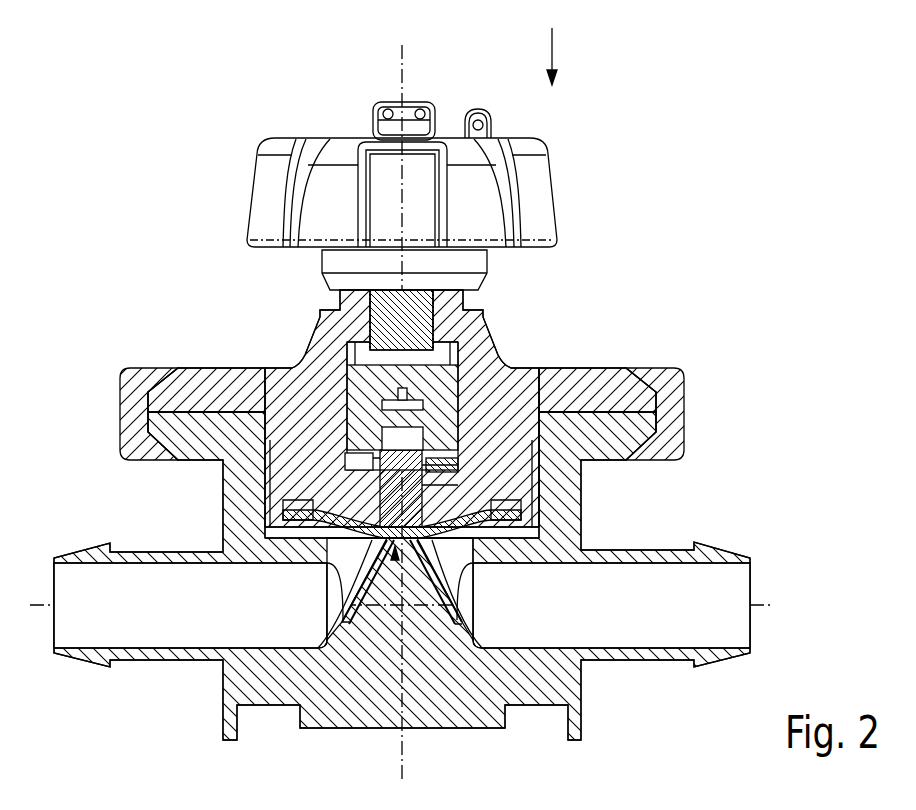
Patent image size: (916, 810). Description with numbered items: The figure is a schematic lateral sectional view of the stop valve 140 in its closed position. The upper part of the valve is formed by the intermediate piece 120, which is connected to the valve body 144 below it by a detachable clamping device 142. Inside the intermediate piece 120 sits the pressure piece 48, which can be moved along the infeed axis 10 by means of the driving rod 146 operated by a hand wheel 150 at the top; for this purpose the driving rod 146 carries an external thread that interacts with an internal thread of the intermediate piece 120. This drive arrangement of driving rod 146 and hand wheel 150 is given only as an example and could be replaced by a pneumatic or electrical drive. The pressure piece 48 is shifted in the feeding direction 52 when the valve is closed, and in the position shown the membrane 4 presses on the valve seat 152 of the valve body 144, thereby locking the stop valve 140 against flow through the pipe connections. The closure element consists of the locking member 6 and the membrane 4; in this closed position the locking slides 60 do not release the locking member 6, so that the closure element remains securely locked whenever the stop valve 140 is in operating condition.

The stop valve 140 is at (396, 411).
The infeed axis 10 is at (405, 86).
The feeding direction 52 is at (553, 48).
The hand wheel 150 is at (536, 192).
The driving rod 146 is at (433, 340).
The intermediate piece 120 is at (185, 390).
The clamping device 142 is at (128, 412).
The valve body 144 is at (188, 433).
The pressure piece 48 is at (445, 405).
The locking slides 60 is at (440, 468).
The locking member 6 is at (440, 490).
The membrane 4 is at (440, 505).
The valve seat 152 is at (352, 619).